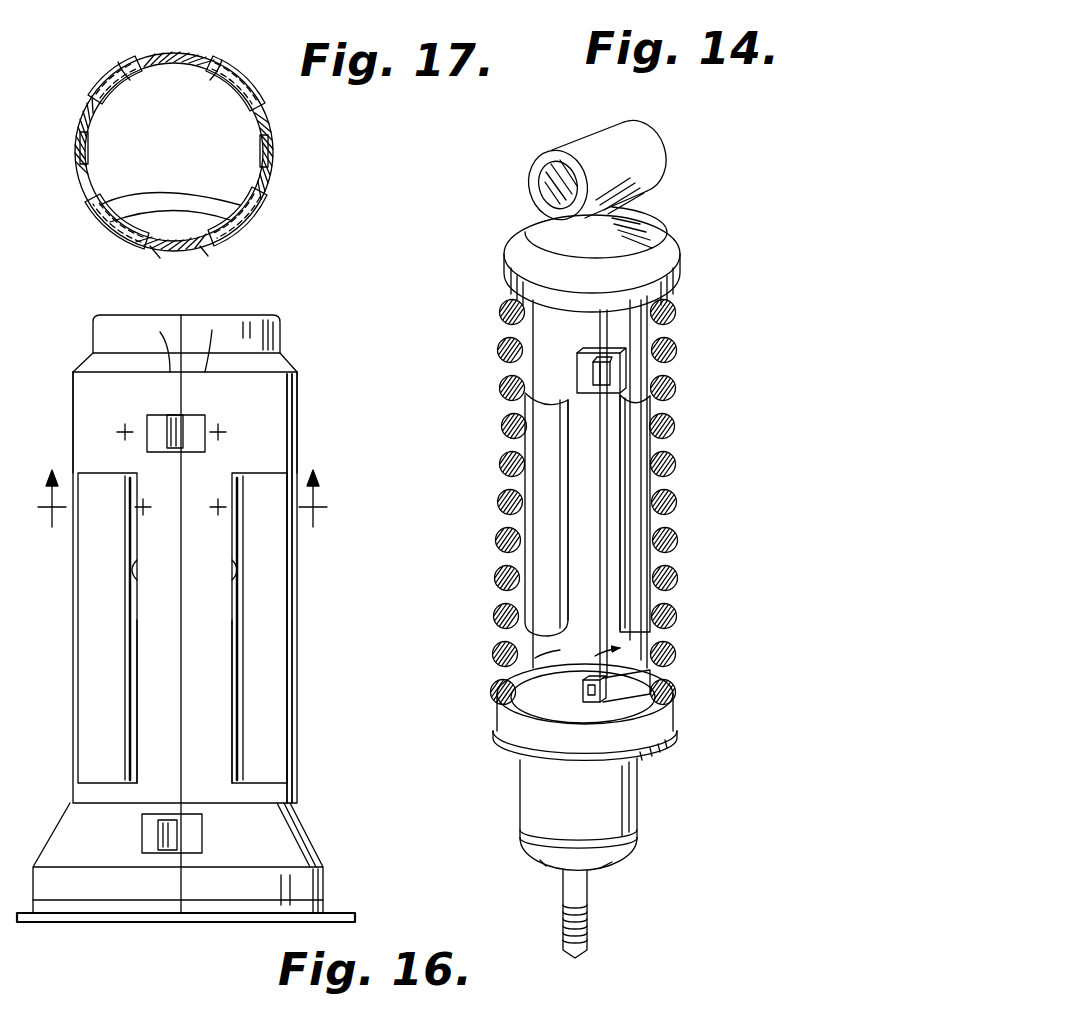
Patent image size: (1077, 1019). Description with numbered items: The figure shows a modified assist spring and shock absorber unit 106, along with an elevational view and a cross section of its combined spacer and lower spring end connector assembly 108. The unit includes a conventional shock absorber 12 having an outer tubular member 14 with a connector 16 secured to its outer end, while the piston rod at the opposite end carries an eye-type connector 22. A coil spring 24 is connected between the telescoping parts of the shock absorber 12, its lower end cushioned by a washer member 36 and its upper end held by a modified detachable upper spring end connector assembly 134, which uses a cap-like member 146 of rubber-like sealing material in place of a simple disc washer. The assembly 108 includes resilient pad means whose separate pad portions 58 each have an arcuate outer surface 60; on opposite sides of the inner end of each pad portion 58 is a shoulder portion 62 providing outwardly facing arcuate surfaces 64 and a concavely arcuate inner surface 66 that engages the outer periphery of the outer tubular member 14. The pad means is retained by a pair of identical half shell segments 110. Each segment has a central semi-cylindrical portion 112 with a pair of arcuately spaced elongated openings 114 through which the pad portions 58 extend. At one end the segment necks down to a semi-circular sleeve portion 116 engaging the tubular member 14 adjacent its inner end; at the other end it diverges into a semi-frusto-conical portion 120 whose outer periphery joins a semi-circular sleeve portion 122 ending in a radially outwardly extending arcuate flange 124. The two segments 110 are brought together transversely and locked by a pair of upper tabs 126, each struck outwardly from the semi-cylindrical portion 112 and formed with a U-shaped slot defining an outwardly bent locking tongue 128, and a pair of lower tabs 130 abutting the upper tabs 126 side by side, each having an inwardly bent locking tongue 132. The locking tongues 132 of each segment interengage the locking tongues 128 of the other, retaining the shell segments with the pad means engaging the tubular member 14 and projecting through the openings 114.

In FIG. 14, the shock absorber 12 is at (646, 800).
In FIG. 14, the outer tubular member 14 is at (532, 796).
In FIG. 14, the connector 16 is at (586, 902).
In FIG. 14, the connector 22 is at (605, 120).
In FIG. 14, the coil spring 24 is at (508, 478).
In FIG. 14, the washer member 36 is at (652, 726).
In FIG. 17, the pad portion 58 is at (240, 226).
In FIG. 16, the pad portion 58 is at (168, 660).
In FIG. 14, the pad portion 58 is at (598, 488).
In FIG. 17, the arcuate outer surface 60 is at (258, 231).
In FIG. 16, the arcuate outer surface 60 is at (82, 632).
In FIG. 14, the arcuate outer surface 60 is at (638, 552).
In FIG. 17, the shoulder portion 62 is at (226, 74).
In FIG. 17, the arcuate surface 64 is at (214, 250).
In FIG. 17, the inner surface 66 is at (250, 202).
In FIG. 14, the assist spring and shock absorber unit 106 is at (746, 188).
In FIG. 17, the combined spacer and lower spring end connector assembly 108 is at (113, 58).
In FIG. 16, the combined spacer and lower spring end connector assembly 108 is at (286, 333).
In FIG. 14, the combined spacer and lower spring end connector assembly 108 is at (652, 342).
In FIG. 17, the half shell segment 110 is at (190, 56).
In FIG. 16, the half shell segment 110 is at (206, 296).
In FIG. 14, the half shell segment 110 is at (530, 662).
In FIG. 16, the semi-cylindrical portion 112 is at (88, 444).
In FIG. 14, the semi-cylindrical portion 112 is at (588, 598).
In FIG. 17, the elongated opening 114 is at (92, 96).
In FIG. 16, the elongated opening 114 is at (176, 588).
In FIG. 14, the elongated opening 114 is at (628, 430).
In FIG. 16, the semi-circular sleeve portion 116 is at (212, 340).
In FIG. 16, the semi-frusto-conical portion 120 is at (200, 862).
In FIG. 14, the semi-frusto-conical portion 120 is at (548, 698).
In FIG. 16, the semi-circular sleeve portion 122 is at (215, 920).
In FIG. 16, the arcuate flange 124 is at (340, 916).
In FIG. 14, the arcuate flange 124 is at (650, 750).
In FIG. 16, the upper tab 126 is at (206, 424).
In FIG. 14, the upper tab 126 is at (598, 356).
In FIG. 17, the locking tongue 128 is at (258, 150).
In FIG. 16, the locking tongue 128 is at (172, 426).
In FIG. 14, the locking tongue 128 is at (596, 372).
In FIG. 16, the lower tab 130 is at (196, 837).
In FIG. 14, the lower tab 130 is at (606, 684).
In FIG. 16, the locking tongue 132 is at (154, 838).
In FIG. 14, the locking tongue 132 is at (597, 704).
In FIG. 14, the upper spring end connector assembly 134 is at (502, 252).
In FIG. 14, the cap-like member 146 is at (660, 242).